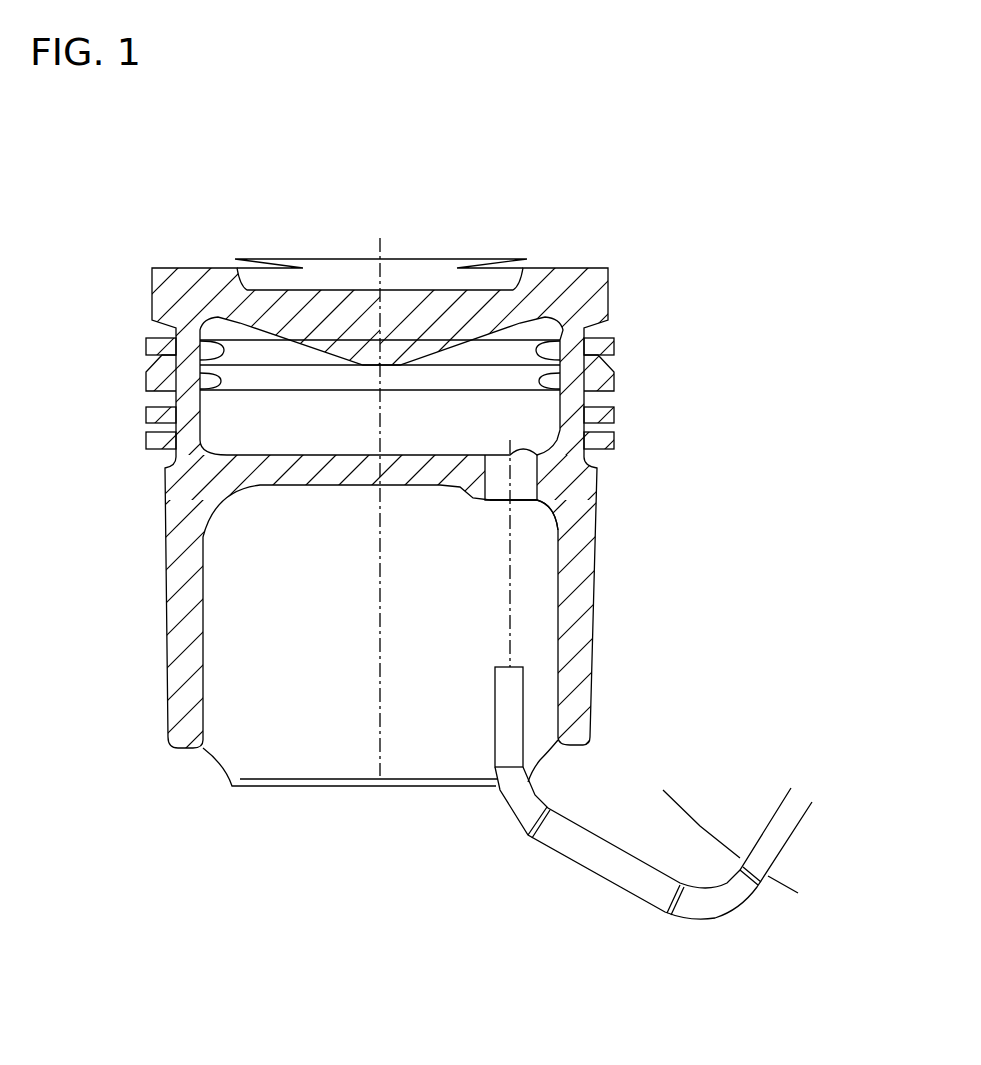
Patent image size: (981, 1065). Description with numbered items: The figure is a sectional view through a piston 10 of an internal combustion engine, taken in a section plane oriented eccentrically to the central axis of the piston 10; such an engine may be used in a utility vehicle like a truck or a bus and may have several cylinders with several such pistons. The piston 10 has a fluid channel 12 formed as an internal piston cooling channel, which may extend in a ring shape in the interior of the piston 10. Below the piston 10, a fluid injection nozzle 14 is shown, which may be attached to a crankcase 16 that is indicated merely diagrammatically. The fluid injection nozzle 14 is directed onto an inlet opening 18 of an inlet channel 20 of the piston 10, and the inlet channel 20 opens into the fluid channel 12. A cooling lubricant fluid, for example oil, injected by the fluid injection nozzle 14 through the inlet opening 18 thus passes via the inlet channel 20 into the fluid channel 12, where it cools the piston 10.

The piston 10 is at (193, 267).
The fluid channel 12 is at (235, 433).
The fluid injection nozzle 14 is at (503, 732).
The crankcase 16 is at (680, 807).
The inlet opening 18 is at (530, 512).
The inlet channel 20 is at (520, 473).